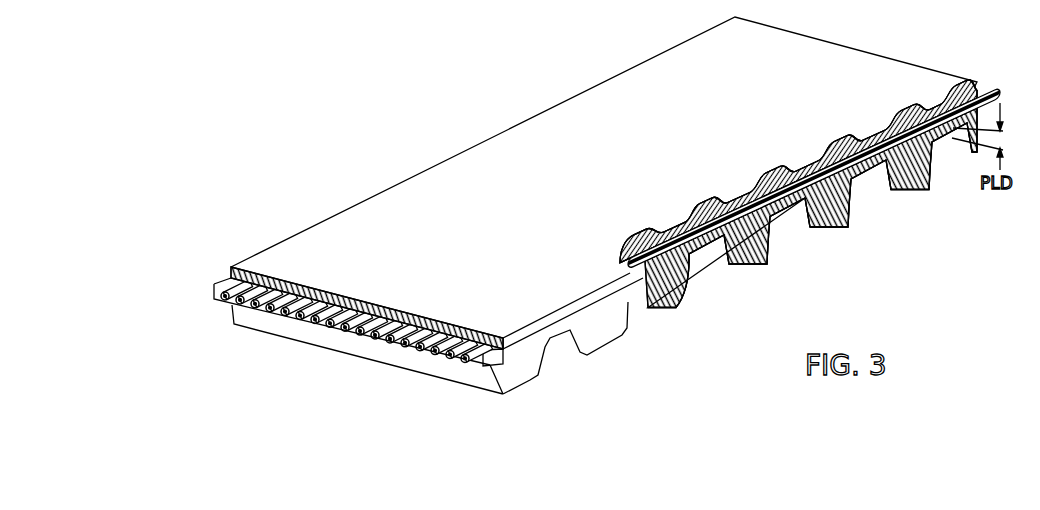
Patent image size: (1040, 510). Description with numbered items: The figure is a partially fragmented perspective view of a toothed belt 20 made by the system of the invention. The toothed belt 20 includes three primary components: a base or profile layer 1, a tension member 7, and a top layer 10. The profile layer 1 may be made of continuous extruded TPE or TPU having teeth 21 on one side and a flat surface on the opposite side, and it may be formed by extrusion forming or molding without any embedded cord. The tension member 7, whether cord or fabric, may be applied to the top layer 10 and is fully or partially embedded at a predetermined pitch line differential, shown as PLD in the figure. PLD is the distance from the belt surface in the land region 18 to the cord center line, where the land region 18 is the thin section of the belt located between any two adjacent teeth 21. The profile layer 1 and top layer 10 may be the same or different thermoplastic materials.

The toothed belt 20 is at (481, 82).
The top layer 10 is at (460, 170).
The tension member 7 is at (413, 350).
The profile layer 1 is at (753, 257).
The teeth 21 is at (828, 220).
The land region 18 is at (865, 182).